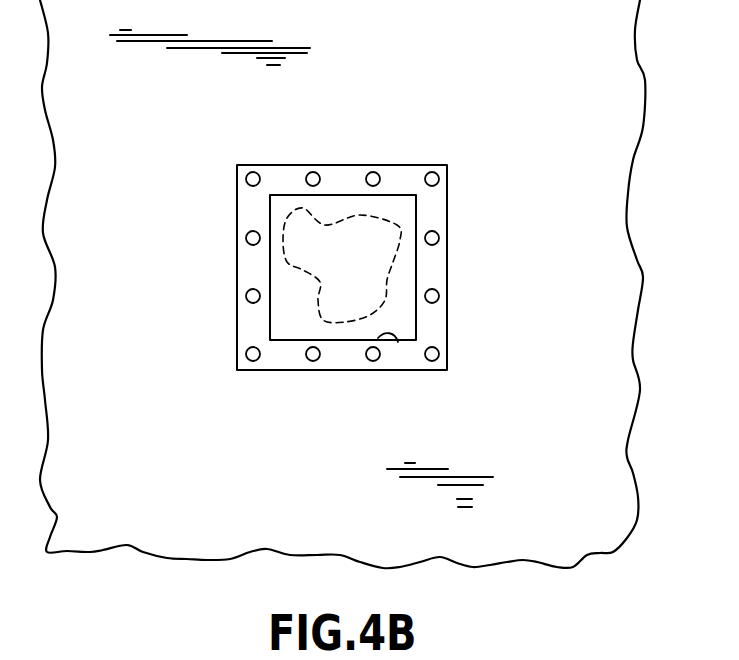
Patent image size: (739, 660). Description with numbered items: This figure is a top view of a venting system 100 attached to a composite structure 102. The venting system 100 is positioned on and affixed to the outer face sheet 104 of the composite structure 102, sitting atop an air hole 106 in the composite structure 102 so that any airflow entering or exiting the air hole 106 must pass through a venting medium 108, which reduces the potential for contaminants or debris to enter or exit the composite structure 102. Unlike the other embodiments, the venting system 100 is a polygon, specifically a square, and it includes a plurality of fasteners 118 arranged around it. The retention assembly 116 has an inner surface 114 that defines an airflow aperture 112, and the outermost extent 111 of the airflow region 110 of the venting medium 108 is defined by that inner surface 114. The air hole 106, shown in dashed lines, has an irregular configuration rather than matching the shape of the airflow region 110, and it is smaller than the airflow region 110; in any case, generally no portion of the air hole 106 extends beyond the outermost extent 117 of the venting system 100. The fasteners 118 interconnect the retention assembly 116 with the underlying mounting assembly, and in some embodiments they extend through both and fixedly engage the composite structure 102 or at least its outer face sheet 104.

The venting system 100 is at (430, 138).
The composite structure 102 is at (187, 558).
The outer face sheet 104 is at (540, 491).
The air hole 106 is at (422, 218).
The venting medium 108 is at (280, 313).
The airflow region 110 is at (280, 273).
The outermost extent of the airflow region 111 is at (267, 209).
The airflow aperture 112 is at (405, 279).
The inner surface 114 is at (398, 342).
The retention assembly 116 is at (287, 358).
The outermost extent of the venting system 117 is at (237, 190).
The fasteners 118 is at (252, 171).